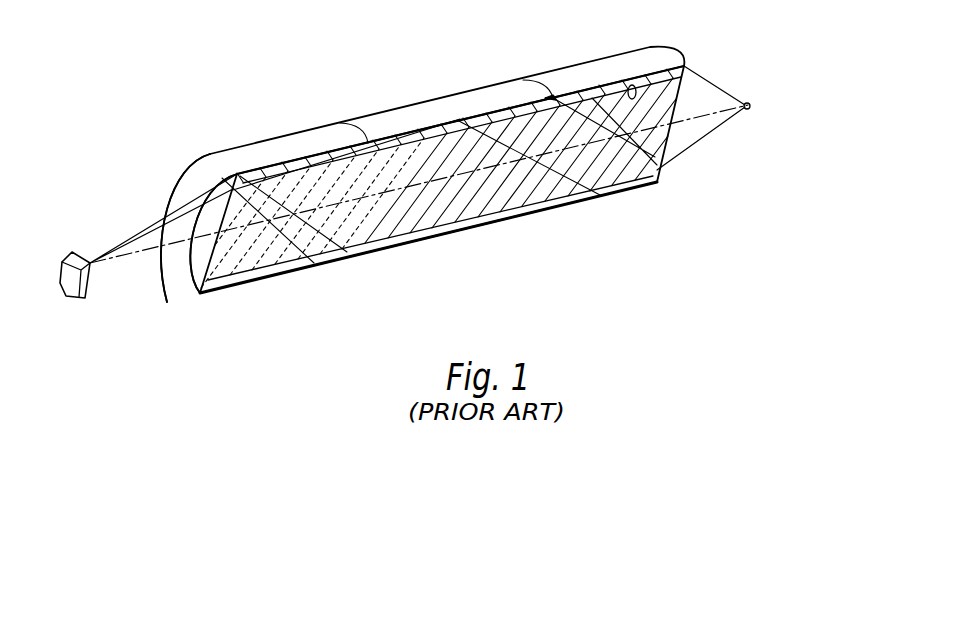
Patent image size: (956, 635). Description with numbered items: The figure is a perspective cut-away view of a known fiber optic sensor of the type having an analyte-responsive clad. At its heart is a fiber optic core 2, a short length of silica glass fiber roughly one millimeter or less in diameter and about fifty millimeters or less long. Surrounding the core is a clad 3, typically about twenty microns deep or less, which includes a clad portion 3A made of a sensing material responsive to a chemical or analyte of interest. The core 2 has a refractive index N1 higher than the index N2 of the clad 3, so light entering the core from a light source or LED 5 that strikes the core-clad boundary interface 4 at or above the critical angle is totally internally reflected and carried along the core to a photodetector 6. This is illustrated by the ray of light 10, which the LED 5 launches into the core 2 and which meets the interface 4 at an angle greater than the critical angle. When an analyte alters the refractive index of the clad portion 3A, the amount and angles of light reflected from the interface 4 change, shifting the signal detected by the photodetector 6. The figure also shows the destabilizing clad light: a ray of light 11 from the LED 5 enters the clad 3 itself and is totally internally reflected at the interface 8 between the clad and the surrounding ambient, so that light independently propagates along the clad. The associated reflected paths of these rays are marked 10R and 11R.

The fiber optic core 2 is at (572, 193).
The clad 3 is at (686, 66).
The clad portion made of sensing material 3A is at (460, 119).
The core-clad boundary interface 4 is at (632, 85).
The light source or LED 5 is at (85, 298).
The photodetector 6 is at (752, 106).
The interface between the clad and the ambient 8 is at (572, 88).
The ray of light input to the core 10 is at (166, 306).
The radius of inner curved surface 10R is at (280, 258).
The ray of light input to the clad 11 is at (167, 213).
The radius of outer curved surface 11R is at (243, 172).